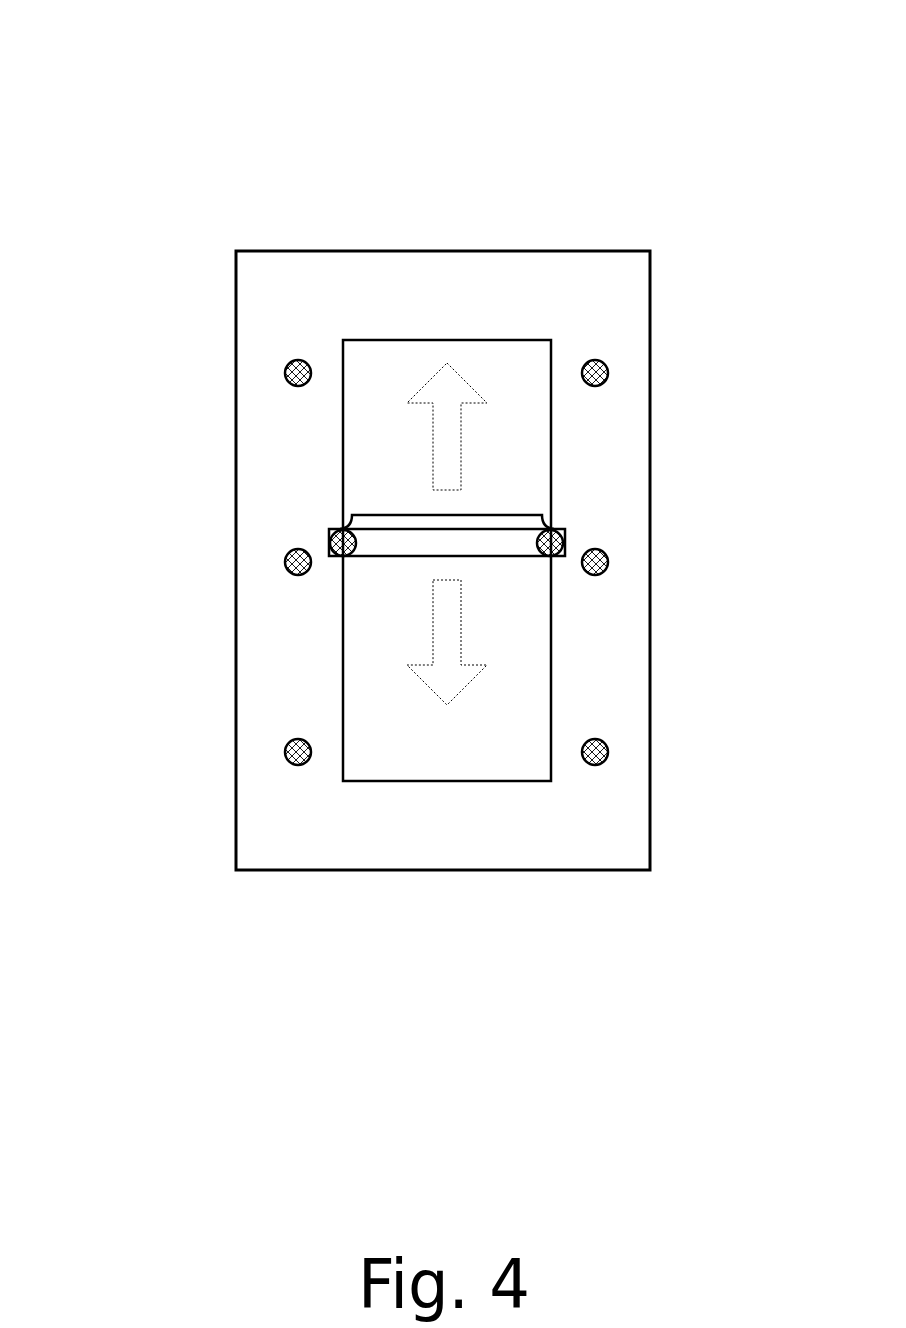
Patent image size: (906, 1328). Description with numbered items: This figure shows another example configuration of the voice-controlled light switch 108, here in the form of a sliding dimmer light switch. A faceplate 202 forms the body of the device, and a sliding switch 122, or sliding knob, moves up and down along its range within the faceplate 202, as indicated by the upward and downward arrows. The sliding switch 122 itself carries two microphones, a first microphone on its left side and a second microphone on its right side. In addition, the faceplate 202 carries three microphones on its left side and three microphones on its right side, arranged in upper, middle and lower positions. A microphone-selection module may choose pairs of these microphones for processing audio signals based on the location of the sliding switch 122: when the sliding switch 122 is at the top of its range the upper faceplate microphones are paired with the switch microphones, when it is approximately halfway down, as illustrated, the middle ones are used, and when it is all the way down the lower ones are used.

The voice-controlled light switch 108 is at (123, 36).
The faceplate 202 is at (300, 273).
The sliding switch 122 is at (389, 515).